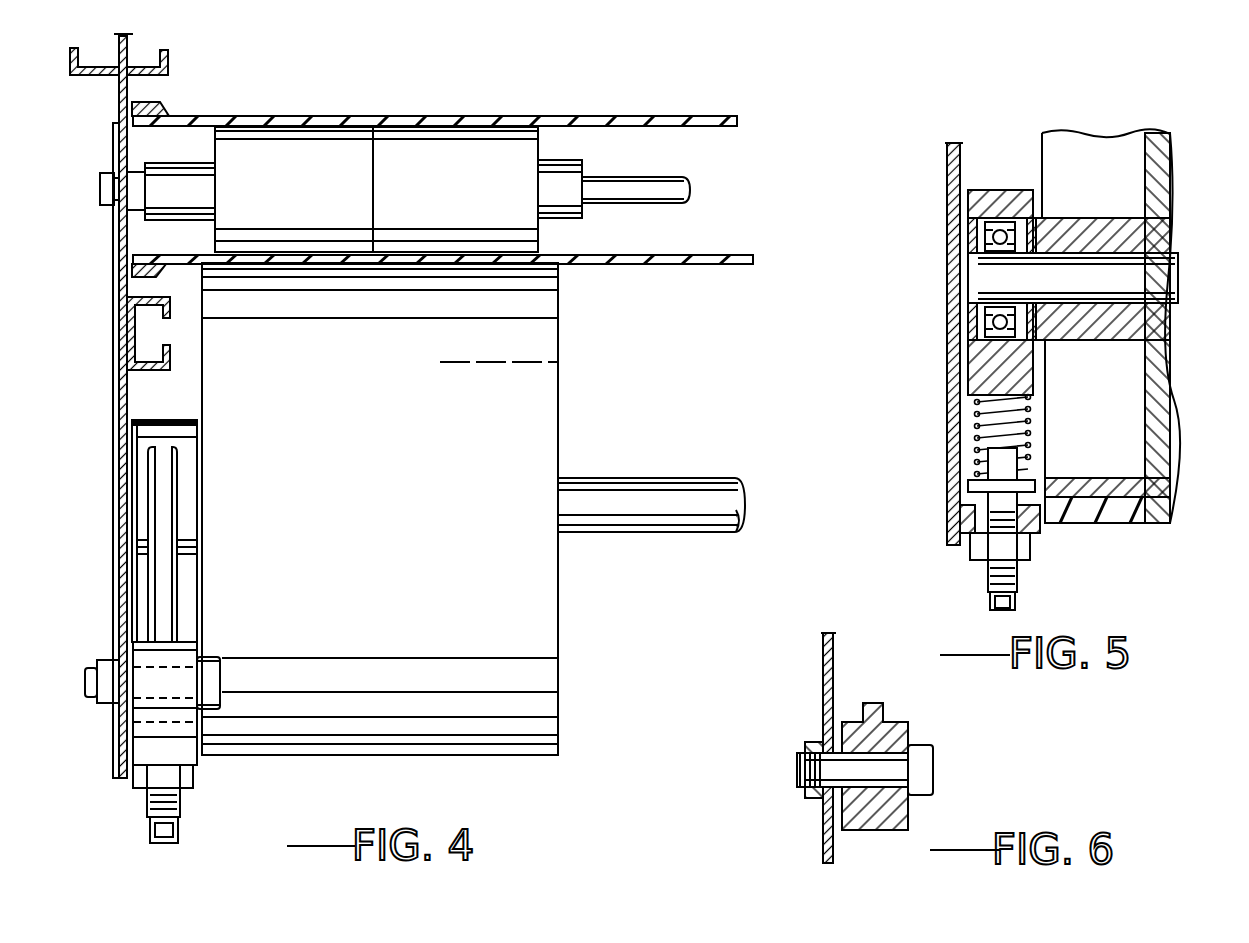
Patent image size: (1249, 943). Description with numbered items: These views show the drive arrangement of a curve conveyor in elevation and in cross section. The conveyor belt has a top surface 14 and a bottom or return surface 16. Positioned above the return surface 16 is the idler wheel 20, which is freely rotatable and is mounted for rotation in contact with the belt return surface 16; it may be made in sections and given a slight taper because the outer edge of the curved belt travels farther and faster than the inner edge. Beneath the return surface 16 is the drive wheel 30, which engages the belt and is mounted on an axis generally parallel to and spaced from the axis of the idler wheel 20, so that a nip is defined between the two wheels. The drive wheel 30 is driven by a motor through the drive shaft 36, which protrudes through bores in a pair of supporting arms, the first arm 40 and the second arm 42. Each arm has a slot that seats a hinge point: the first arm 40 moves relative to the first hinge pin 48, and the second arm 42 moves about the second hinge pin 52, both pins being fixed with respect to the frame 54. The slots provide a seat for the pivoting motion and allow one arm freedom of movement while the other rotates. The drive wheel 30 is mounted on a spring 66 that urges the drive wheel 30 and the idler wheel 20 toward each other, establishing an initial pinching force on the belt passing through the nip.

In FIG. 4, the top surface 14 is at (398, 114).
In FIG. 4, the return surface 16 is at (707, 253).
In FIG. 4, the idler wheel 20 is at (540, 143).
In FIG. 5, the idler wheel 20 is at (1170, 165).
In FIG. 4, the drive wheel 30 is at (560, 377).
In FIG. 5, the drive wheel 30 is at (1105, 525).
In FIG. 4, the drive shaft 36 is at (653, 533).
In FIG. 5, the drive shaft 36 is at (1148, 254).
In FIG. 4, the first arm 40 is at (132, 443).
In FIG. 6, the second arm 42 is at (910, 820).
In FIG. 4, the first hinge pin 48 is at (213, 655).
In FIG. 6, the second hinge pin 52 is at (880, 752).
In FIG. 4, the frame 54 is at (118, 528).
In FIG. 5, the frame 54 is at (950, 398).
In FIG. 6, the frame 54 is at (823, 683).
In FIG. 5, the spring 66 is at (975, 455).